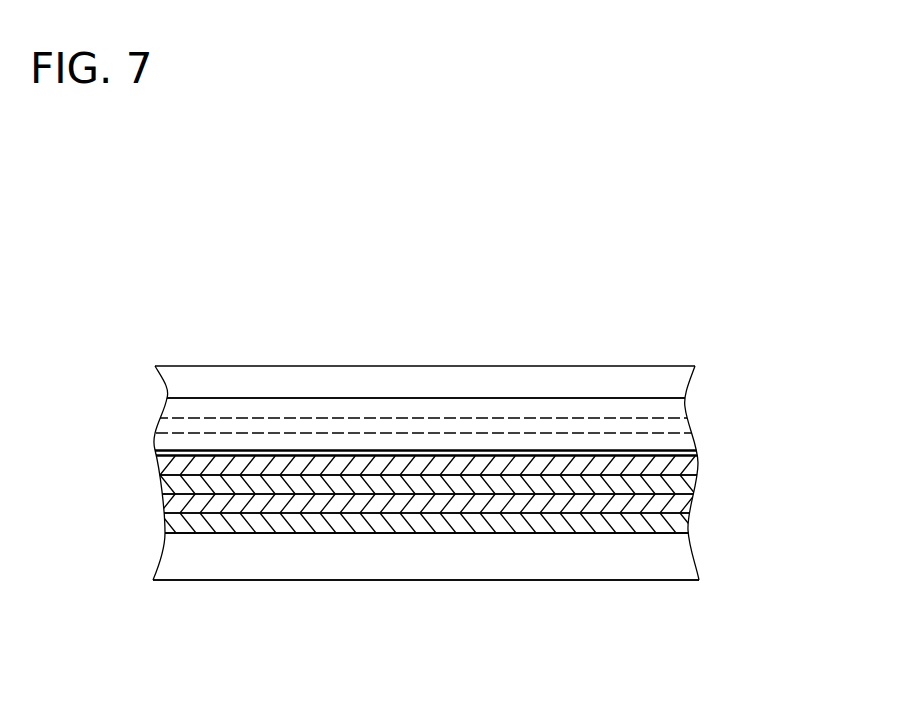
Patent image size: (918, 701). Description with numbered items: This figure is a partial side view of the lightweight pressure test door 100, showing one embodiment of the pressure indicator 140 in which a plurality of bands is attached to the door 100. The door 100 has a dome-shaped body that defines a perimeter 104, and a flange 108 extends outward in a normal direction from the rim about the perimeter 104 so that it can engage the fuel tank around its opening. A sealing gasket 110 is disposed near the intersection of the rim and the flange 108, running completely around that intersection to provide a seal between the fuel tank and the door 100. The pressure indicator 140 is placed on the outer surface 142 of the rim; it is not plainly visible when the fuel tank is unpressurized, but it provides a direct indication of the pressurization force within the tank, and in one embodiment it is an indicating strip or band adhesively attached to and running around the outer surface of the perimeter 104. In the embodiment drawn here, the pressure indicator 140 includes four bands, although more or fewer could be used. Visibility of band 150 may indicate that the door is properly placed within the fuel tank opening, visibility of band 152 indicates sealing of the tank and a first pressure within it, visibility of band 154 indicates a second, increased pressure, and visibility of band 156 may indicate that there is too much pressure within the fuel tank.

The lightweight pressure test door 100 is at (540, 318).
The perimeter 104 is at (387, 580).
The flange 108 is at (683, 366).
The sealing gasket 110 is at (685, 407).
The pressure indicator 140 is at (135, 453).
The outer surface 142 is at (697, 570).
The band 150 is at (690, 525).
The band 152 is at (688, 507).
The band 154 is at (687, 485).
The band 156 is at (690, 460).